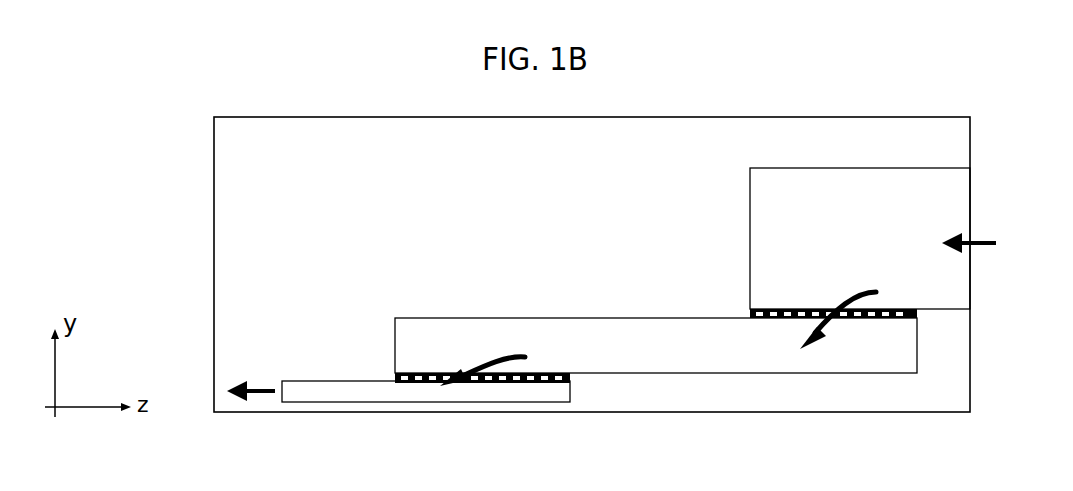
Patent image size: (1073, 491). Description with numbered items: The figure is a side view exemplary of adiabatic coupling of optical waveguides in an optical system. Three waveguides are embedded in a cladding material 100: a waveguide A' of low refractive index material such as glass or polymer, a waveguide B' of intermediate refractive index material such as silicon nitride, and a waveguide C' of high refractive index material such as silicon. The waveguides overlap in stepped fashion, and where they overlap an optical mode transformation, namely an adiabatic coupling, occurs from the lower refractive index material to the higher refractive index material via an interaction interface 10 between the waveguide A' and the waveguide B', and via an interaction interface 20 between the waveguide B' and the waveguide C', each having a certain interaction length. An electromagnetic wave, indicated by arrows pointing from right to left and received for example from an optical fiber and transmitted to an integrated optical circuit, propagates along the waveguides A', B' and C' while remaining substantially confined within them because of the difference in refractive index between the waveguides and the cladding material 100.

The cladding material 100 is at (289, 133).
The interaction interface 10 is at (928, 320).
The interaction interface 20 is at (577, 388).
The waveguide A' is at (860, 219).
The waveguide B' is at (656, 315).
The waveguide C' is at (426, 436).